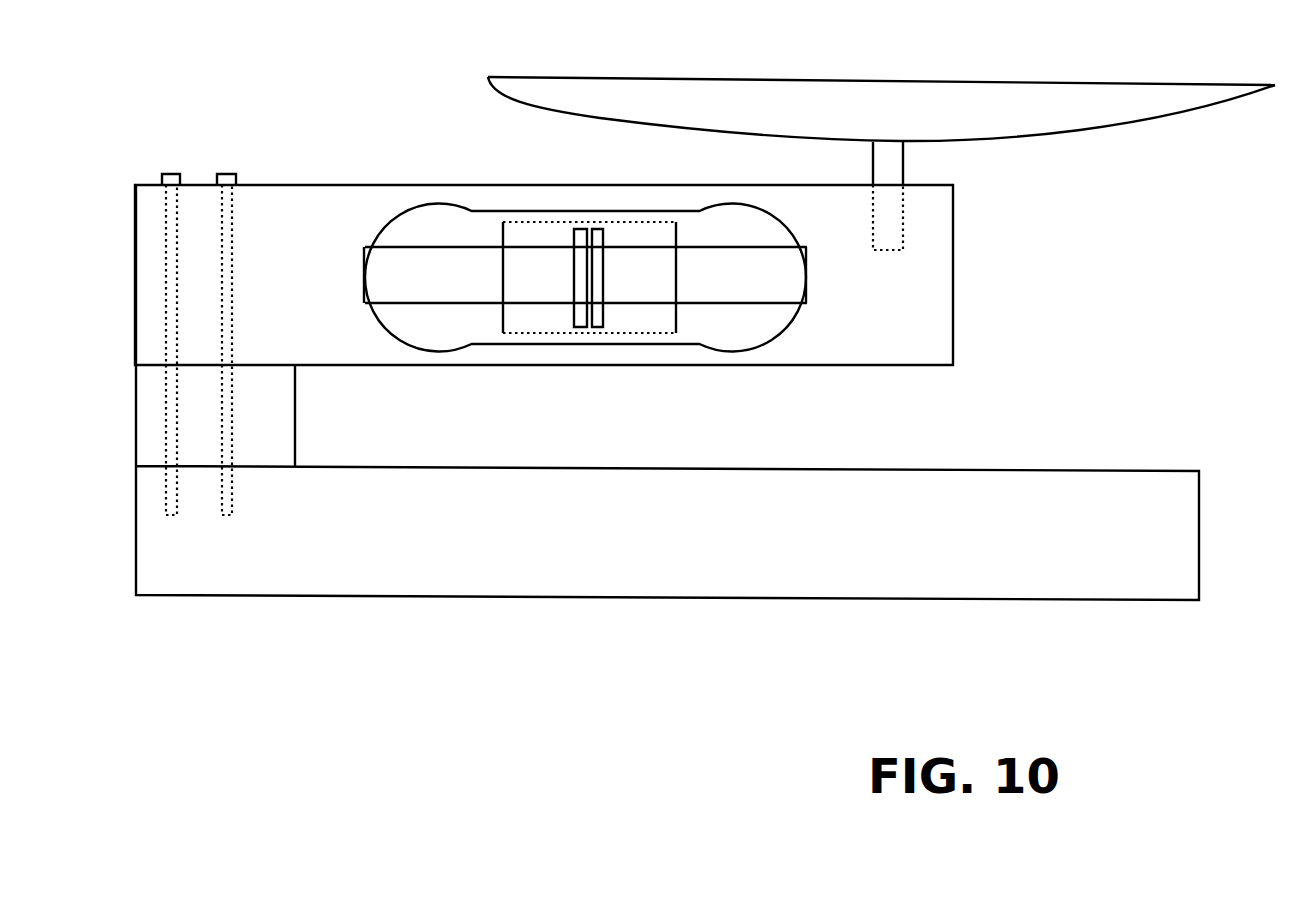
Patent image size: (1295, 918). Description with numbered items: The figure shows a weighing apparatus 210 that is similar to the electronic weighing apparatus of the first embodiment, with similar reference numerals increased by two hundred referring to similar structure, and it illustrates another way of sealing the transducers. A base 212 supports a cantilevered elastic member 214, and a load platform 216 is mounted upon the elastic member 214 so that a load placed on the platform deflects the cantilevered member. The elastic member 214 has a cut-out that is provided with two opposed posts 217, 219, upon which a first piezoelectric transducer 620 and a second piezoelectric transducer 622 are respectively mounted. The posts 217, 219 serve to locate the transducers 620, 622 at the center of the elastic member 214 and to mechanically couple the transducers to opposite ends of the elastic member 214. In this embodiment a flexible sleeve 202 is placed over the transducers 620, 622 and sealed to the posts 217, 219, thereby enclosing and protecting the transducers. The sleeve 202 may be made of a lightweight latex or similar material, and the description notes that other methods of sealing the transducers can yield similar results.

The weighing apparatus 210 is at (390, 710).
The base 212 is at (667, 392).
The cantilevered elastic member 214 is at (544, 275).
The load platform 216 is at (1053, 127).
The post 217 is at (433, 277).
The post 219 is at (741, 278).
The flexible sleeve 202 is at (503, 287).
The piezoelectric transducer 620 is at (570, 317).
The piezoelectric transducer 622 is at (595, 318).